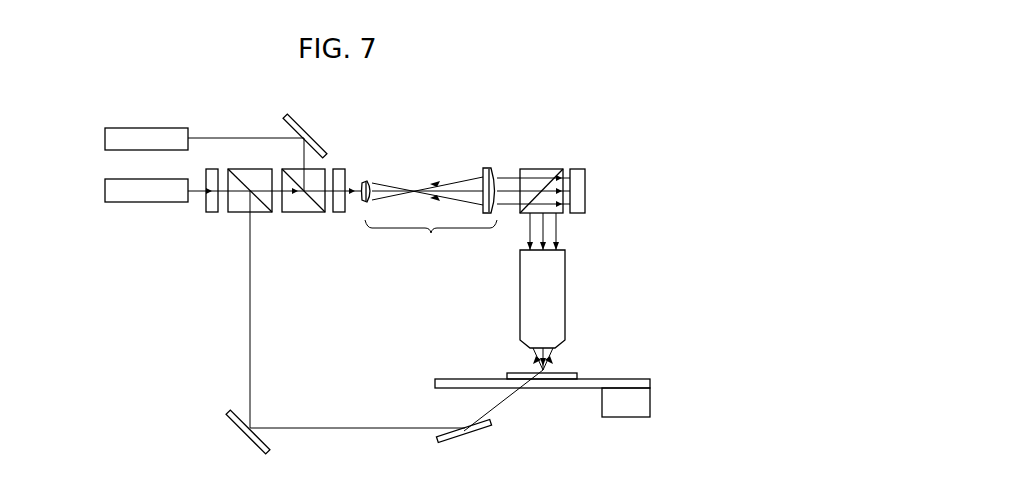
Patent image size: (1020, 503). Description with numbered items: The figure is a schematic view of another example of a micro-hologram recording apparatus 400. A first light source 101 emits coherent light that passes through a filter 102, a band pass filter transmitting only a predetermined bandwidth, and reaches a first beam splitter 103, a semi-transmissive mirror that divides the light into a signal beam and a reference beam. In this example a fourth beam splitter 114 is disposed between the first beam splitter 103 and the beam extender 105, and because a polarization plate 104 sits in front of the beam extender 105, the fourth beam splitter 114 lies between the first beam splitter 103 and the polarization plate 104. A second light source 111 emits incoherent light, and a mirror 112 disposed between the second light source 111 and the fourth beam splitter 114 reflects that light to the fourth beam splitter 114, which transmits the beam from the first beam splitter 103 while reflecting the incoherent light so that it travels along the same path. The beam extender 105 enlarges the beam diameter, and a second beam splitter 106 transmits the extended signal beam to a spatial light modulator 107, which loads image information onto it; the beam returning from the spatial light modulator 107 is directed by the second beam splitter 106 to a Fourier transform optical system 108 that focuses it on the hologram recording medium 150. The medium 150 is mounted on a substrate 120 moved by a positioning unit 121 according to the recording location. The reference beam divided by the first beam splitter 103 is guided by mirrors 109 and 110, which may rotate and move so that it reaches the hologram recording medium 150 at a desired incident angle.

The micro-hologram recording apparatus 400 is at (173, 338).
The second light source 111 is at (104, 139).
The first light source 101 is at (104, 191).
The filter 102 is at (212, 214).
The first beam splitter 103 is at (262, 213).
The fourth beam splitter 114 is at (299, 213).
The polarization plate 104 is at (335, 213).
The mirror 112 is at (310, 129).
The beam extender 105 is at (430, 212).
The second beam splitter 106 is at (533, 169).
The spatial light modulator 107 is at (576, 168).
The Fourier transform optical system 108 is at (565, 289).
The hologram recording medium 150 is at (577, 373).
The substrate 120 is at (651, 384).
The positioning unit 121 is at (651, 407).
The mirror 109 is at (245, 434).
The mirror 110 is at (466, 438).